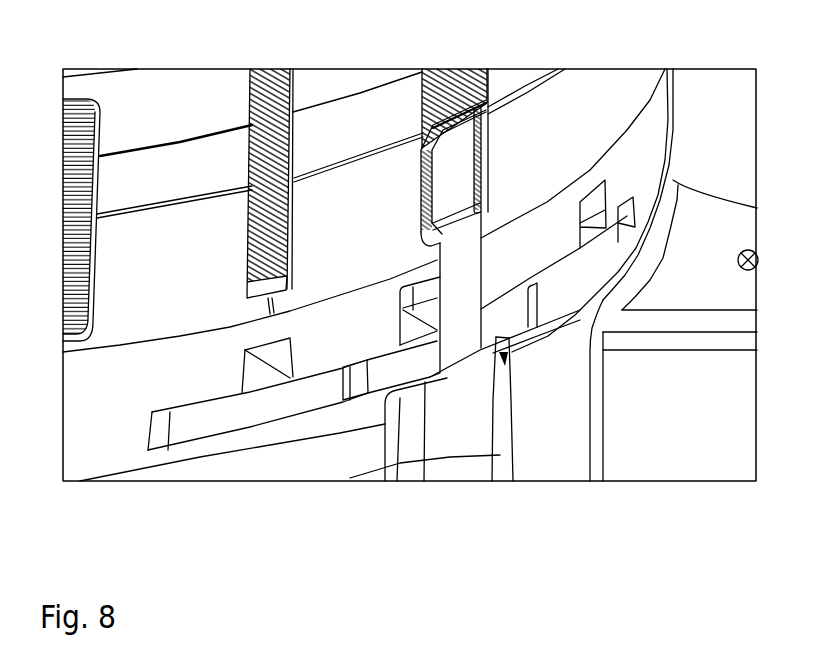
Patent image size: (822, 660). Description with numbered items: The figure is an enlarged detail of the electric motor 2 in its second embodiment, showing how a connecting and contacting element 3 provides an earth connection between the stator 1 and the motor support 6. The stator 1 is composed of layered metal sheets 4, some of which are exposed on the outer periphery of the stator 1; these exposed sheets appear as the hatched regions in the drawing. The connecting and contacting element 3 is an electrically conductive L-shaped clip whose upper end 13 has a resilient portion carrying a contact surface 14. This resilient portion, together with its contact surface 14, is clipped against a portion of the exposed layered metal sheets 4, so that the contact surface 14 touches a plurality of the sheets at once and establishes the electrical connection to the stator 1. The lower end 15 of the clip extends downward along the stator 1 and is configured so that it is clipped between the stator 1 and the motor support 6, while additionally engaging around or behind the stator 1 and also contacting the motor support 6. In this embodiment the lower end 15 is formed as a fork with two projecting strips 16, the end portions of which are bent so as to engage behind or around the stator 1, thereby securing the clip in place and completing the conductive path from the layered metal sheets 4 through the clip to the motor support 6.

The stator 1 is at (627, 82).
The electric motor 2 is at (705, 128).
The connecting and contacting element 3 is at (470, 161).
The layered metal sheets 4 is at (96, 106).
The motor support 6 is at (708, 222).
The upper end 13 is at (470, 113).
The contact surface 14 is at (413, 198).
The lower end 15 is at (517, 481).
The projecting strips 16 is at (424, 481).